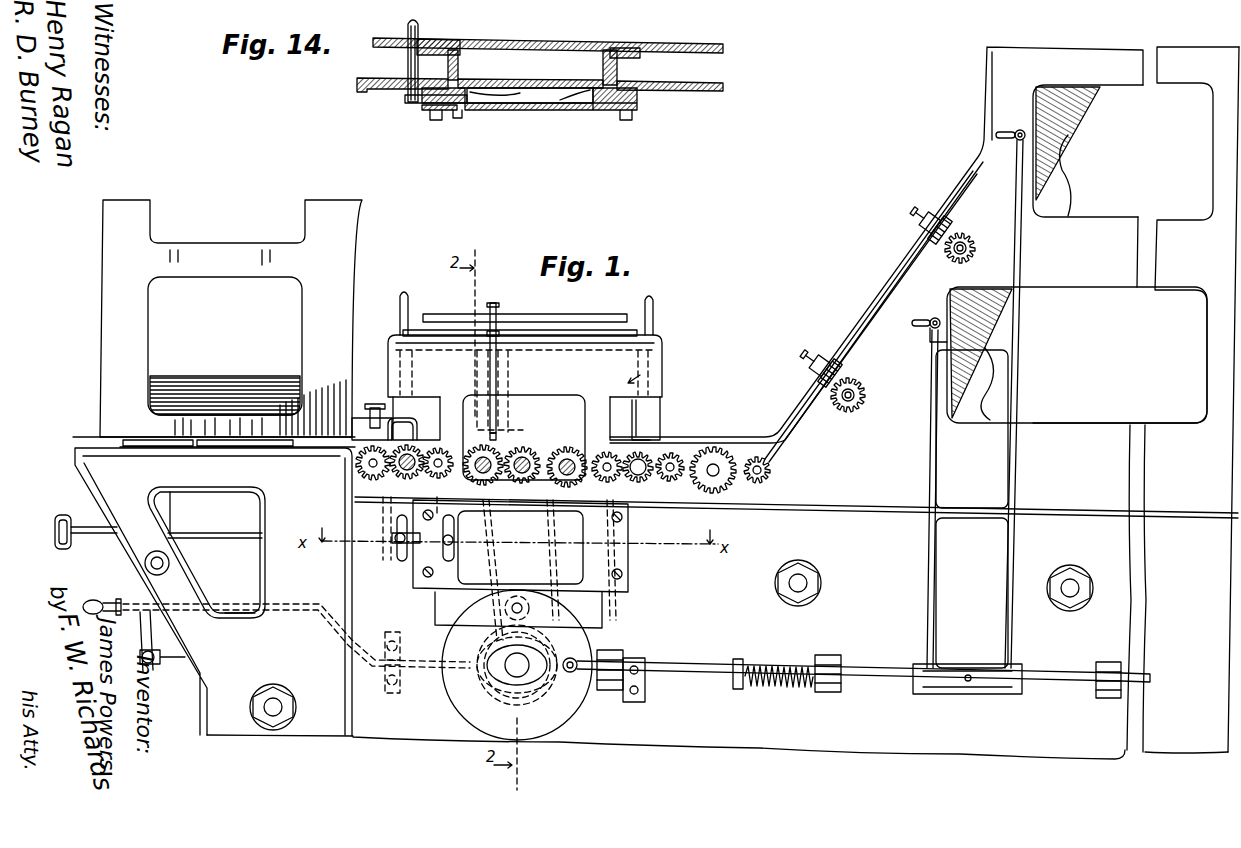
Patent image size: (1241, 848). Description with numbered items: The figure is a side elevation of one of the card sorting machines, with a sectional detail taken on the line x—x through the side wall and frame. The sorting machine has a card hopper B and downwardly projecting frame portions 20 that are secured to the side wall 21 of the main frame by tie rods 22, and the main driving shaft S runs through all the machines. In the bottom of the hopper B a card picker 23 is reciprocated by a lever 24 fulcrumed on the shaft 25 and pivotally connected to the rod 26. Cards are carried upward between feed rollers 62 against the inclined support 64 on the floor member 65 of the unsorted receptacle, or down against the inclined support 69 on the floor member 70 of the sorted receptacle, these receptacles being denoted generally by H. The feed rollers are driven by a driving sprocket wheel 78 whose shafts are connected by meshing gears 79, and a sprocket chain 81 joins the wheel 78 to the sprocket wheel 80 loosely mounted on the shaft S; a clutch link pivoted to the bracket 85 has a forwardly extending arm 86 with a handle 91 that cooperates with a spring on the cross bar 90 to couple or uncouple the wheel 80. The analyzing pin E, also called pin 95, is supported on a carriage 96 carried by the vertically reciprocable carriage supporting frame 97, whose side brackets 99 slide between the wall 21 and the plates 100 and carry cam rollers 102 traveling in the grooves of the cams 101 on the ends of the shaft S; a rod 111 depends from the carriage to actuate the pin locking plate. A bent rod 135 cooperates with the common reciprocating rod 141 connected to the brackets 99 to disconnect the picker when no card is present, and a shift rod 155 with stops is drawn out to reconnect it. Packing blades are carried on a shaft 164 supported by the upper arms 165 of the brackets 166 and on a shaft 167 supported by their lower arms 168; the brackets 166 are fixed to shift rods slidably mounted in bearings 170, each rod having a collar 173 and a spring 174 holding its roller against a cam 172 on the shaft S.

In FIG. 14, the downwardly projecting frame portion 20 is at (690, 54).
In FIG. 14, the side wall 21 is at (683, 93).
In FIG. 1, the side wall 21 is at (657, 403).
In FIG. 1, the tie rod 22 is at (1068, 623).
In FIG. 1, the card picker 23 is at (150, 449).
In FIG. 1, the lever 24 is at (163, 512).
In FIG. 1, the shaft 25 is at (145, 563).
In FIG. 1, the rod 26 is at (178, 664).
In FIG. 1, the feed roller 62 is at (828, 355).
In FIG. 1, the inclined support 64 is at (1066, 160).
In FIG. 1, the floor member 65 is at (1146, 252).
In FIG. 1, the inclined support 69 is at (985, 378).
In FIG. 1, the floor member 70 is at (1138, 425).
In FIG. 1, the driving sprocket wheel 78 is at (528, 455).
In FIG. 1, the gear 79 is at (388, 468).
In FIG. 1, the sprocket wheel 80 is at (590, 660).
In FIG. 1, the sprocket chain 81 is at (545, 541).
In FIG. 1, the bracket 85 is at (648, 680).
In FIG. 1, the forwardly extending arm 86 is at (238, 613).
In FIG. 1, the cross bar 90 is at (388, 682).
In FIG. 1, the handle 91 is at (118, 600).
In FIG. 1, the analyzing pin 95 is at (497, 416).
In FIG. 1, the carriage 96 is at (594, 331).
In FIG. 1, the carriage supporting frame 97 is at (655, 383).
In FIG. 14, the side bracket 99 is at (472, 96).
In FIG. 1, the side bracket 99 is at (442, 600).
In FIG. 14, the plate 100 is at (580, 106).
In FIG. 1, the plate 100 is at (597, 580).
In FIG. 1, the cam 101 is at (547, 725).
In FIG. 1, the cam roller 102 is at (545, 577).
In FIG. 1, the rod 111 is at (640, 413).
In FIG. 1, the bent rod 135 is at (430, 417).
In FIG. 14, the reciprocating rod 141 is at (408, 61).
In FIG. 1, the reciprocating rod 141 is at (396, 545).
In FIG. 1, the shift rod 155 is at (230, 538).
In FIG. 1, the shaft 164 is at (1020, 130).
In FIG. 1, the upper arm 165 is at (1024, 237).
In FIG. 1, the bracket 166 is at (920, 473).
In FIG. 1, the shaft 167 is at (937, 318).
In FIG. 1, the lower arm 168 is at (926, 335).
In FIG. 1, the bearing 170 is at (845, 692).
In FIG. 1, the cam 172 is at (530, 688).
In FIG. 1, the collar 173 is at (737, 692).
In FIG. 1, the spring 174 is at (780, 692).
In FIG. 1, the card hopper B is at (231, 318).
In FIG. 1, the analyzing pin E is at (494, 306).
In FIG. 1, the receptacle H is at (983, 148).
In FIG. 1, the main driving shaft S is at (508, 673).